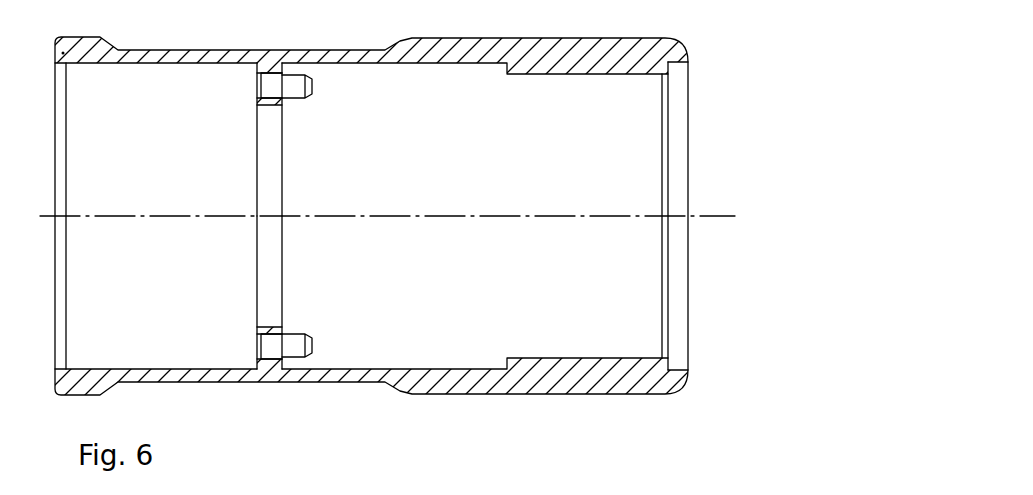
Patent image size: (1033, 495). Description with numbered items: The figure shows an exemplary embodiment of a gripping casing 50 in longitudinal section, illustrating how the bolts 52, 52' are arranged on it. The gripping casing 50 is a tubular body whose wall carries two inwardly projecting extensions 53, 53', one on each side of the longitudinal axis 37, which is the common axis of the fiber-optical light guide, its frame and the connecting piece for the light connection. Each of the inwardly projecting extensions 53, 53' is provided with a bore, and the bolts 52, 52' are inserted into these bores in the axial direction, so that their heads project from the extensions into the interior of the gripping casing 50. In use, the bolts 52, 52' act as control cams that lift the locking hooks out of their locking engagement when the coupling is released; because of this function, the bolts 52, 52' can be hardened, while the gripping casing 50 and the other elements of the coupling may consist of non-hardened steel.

The gripping casing 50 is at (598, 58).
The longitudinal axis 37 is at (640, 218).
The inwardly projecting extension 53 is at (252, 112).
The bolt 52 is at (297, 52).
The inwardly projecting extension 53' is at (257, 325).
The bolt 52' is at (306, 384).